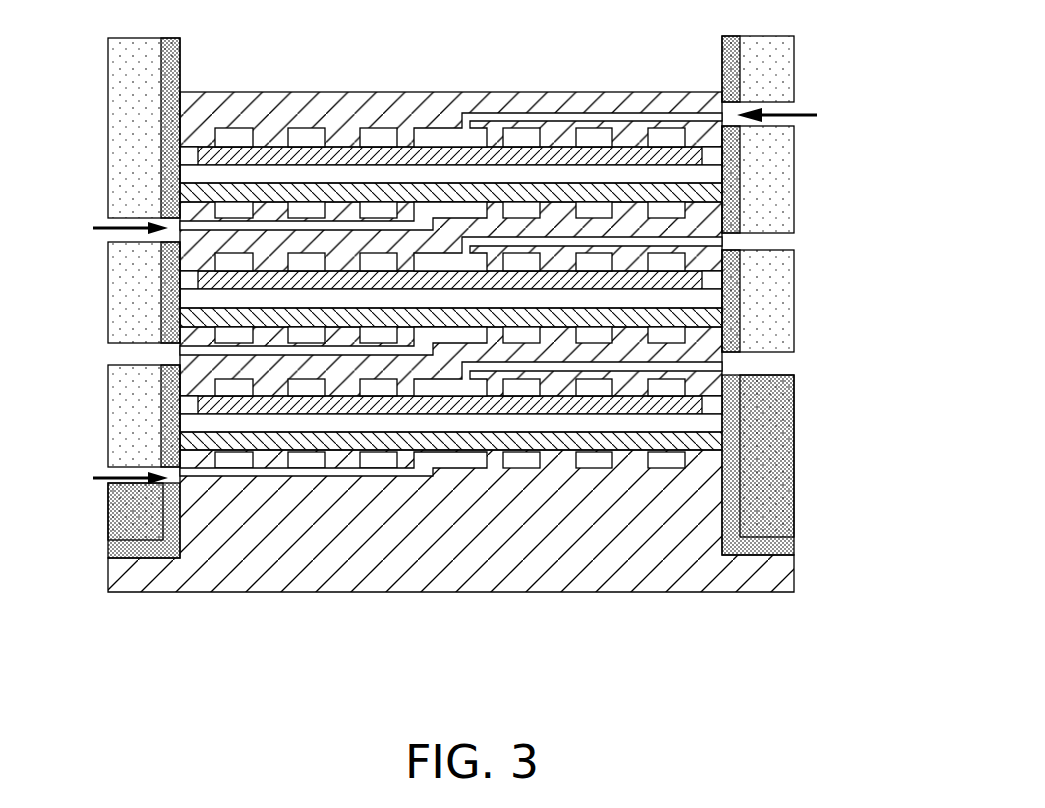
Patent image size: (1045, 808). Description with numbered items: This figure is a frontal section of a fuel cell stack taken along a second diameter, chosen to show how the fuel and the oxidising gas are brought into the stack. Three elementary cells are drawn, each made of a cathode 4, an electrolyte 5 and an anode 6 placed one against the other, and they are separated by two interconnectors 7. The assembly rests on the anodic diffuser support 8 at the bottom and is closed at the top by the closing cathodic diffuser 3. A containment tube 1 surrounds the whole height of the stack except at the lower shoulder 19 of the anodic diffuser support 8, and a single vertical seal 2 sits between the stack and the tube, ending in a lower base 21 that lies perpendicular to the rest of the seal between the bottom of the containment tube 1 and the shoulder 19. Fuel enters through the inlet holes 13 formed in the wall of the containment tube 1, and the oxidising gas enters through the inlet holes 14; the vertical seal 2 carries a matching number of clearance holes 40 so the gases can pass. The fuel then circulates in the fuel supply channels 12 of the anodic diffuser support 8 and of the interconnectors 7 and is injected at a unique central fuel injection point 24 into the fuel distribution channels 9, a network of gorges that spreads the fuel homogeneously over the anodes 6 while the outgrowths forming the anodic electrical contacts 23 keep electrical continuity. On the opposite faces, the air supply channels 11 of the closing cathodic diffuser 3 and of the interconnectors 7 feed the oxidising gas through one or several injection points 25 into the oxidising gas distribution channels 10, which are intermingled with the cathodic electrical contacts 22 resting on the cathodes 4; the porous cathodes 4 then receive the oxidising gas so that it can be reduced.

The containment tube 1 is at (765, 46).
The vertical seal 2 is at (170, 148).
The closing cathodic diffuser 3 is at (315, 110).
The cathode 4 is at (708, 269).
The electrolyte 5 is at (706, 298).
The anode 6 is at (708, 328).
The interconnector 7 is at (182, 388).
The anodic diffuser support 8 is at (247, 583).
The fuel distribution channels 9 is at (307, 462).
The oxidising gas distribution channels 10 is at (456, 131).
The air supply channel 11 is at (522, 118).
The fuel supply channel 12 is at (206, 236).
The fuel inlet hole 13 is at (133, 487).
The oxidising gas inlet hole 14 is at (766, 106).
The lower shoulder 19 is at (145, 553).
The lower base 21 is at (772, 540).
The cathodic electrical contacts 22 is at (631, 146).
The anodic electrical contacts 23 is at (622, 457).
The fuel injection point 24 is at (442, 480).
The injection points 25 is at (468, 372).
The clearance holes 40 is at (727, 365).